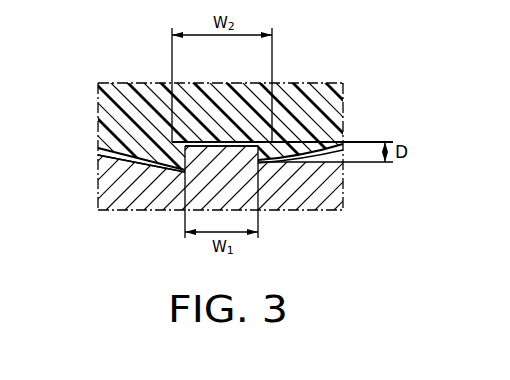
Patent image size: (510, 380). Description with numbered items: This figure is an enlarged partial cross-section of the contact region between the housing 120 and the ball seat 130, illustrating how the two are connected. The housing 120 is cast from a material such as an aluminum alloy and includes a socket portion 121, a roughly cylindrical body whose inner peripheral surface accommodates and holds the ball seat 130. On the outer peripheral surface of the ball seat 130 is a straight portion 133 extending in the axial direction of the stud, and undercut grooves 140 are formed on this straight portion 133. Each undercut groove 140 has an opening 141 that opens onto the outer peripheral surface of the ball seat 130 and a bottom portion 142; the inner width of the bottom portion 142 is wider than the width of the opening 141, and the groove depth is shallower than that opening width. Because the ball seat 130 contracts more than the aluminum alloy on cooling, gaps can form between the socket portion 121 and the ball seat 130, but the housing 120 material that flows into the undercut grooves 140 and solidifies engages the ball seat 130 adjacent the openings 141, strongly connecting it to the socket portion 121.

The housing 120 is at (295, 211).
The socket portion 121 is at (98, 177).
The ball seat 130 is at (299, 83).
The straight portion 133 is at (98, 150).
The undercut grooves 140 is at (92, 42).
The opening 141 is at (187, 163).
The bottom portion 142 is at (191, 156).